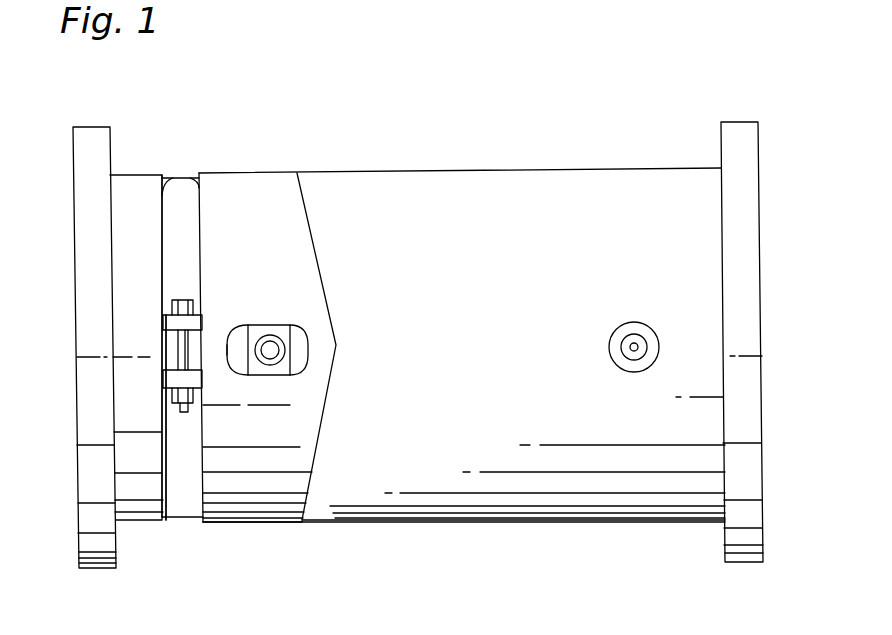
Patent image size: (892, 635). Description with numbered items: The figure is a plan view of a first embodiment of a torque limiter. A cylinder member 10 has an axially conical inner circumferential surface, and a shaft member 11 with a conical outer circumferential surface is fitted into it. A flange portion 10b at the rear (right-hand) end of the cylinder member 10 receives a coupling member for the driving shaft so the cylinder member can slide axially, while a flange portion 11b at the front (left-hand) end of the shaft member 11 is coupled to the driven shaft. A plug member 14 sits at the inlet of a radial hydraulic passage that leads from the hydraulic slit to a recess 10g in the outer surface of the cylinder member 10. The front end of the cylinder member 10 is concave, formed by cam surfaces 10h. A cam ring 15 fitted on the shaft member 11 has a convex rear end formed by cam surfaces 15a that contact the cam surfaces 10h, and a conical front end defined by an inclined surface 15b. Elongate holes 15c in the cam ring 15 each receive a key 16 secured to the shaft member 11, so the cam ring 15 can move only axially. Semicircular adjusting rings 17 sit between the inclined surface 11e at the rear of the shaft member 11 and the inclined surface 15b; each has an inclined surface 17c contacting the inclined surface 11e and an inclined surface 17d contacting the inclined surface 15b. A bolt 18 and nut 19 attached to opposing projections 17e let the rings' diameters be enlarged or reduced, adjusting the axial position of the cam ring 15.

The cylinder member 10 is at (493, 507).
The flange portion 10b is at (736, 133).
The recess 10g is at (636, 325).
The cam surfaces 10h is at (331, 376).
The shaft member 11 is at (148, 512).
The flange portion 11b is at (98, 547).
The inclined surface 11e is at (173, 180).
The plug member 14 is at (634, 355).
The cam ring 15 is at (287, 447).
The cam surfaces 15a is at (312, 330).
The inclined surface 15b is at (178, 247).
The elongate holes 15c is at (242, 332).
The key 16 is at (287, 340).
The adjusting rings 17 is at (178, 247).
The inclined surface 17c is at (160, 228).
The inclined surface 17d is at (203, 260).
The projections 17e is at (170, 325).
The bolt 18 is at (178, 302).
The nut 19 is at (183, 410).